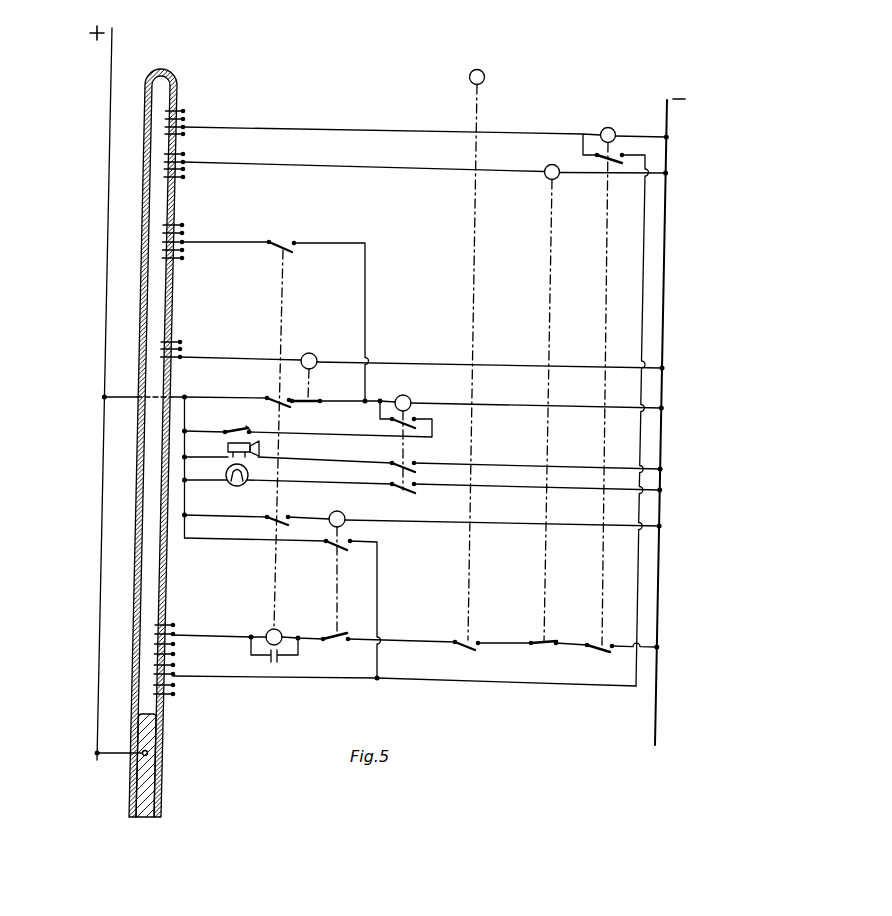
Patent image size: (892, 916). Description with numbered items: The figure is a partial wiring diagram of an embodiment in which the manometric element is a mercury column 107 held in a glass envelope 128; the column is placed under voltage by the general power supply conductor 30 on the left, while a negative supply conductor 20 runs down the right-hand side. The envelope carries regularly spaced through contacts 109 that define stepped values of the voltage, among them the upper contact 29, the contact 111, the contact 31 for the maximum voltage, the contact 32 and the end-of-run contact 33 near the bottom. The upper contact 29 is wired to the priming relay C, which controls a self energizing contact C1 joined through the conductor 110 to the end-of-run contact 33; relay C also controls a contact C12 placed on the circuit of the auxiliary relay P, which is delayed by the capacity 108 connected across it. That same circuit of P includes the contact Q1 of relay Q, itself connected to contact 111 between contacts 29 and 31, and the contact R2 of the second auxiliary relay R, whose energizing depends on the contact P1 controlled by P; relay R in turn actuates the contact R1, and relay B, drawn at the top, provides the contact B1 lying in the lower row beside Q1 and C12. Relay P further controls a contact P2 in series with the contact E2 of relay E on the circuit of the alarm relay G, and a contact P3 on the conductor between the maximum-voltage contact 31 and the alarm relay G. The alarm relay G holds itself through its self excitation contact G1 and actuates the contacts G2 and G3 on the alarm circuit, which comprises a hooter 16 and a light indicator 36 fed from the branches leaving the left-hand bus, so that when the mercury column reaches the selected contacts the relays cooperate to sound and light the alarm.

The negative supply conductor 20 is at (665, 277).
The general power supply conductor 30 is at (106, 262).
The envelope 128 is at (145, 147).
The mercury column 107 is at (150, 775).
The upper contact 29 is at (185, 126).
The contact 111 is at (185, 162).
The through contacts 109 is at (180, 181).
The contact for the maximum voltage 31 is at (185, 242).
The contact 32 is at (183, 356).
The end-of-run contact 33 is at (176, 673).
The conductor 110 is at (643, 310).
The hooter 16 is at (228, 447).
The light indicator 36 is at (233, 487).
The capacity 108 is at (285, 661).
The relay B is at (485, 77).
The priming relay C is at (611, 130).
The relay Q is at (547, 177).
The relay E is at (315, 356).
The alarm relay G is at (411, 397).
The second auxiliary relay R is at (345, 516).
The auxiliary relay P is at (280, 630).
The self energizing contact C1 is at (604, 163).
The contact C12 is at (606, 654).
The contact P1 is at (272, 522).
The contact P2 is at (284, 406).
The contact P3 is at (285, 240).
The contact E2 is at (307, 403).
The self excitation contact G1 is at (433, 438).
The alarm contact G2 is at (418, 472).
The alarm contact G3 is at (418, 493).
The contact R1 is at (345, 551).
The contact R2 is at (341, 633).
The contact B1 is at (473, 653).
The contact Q1 is at (548, 650).